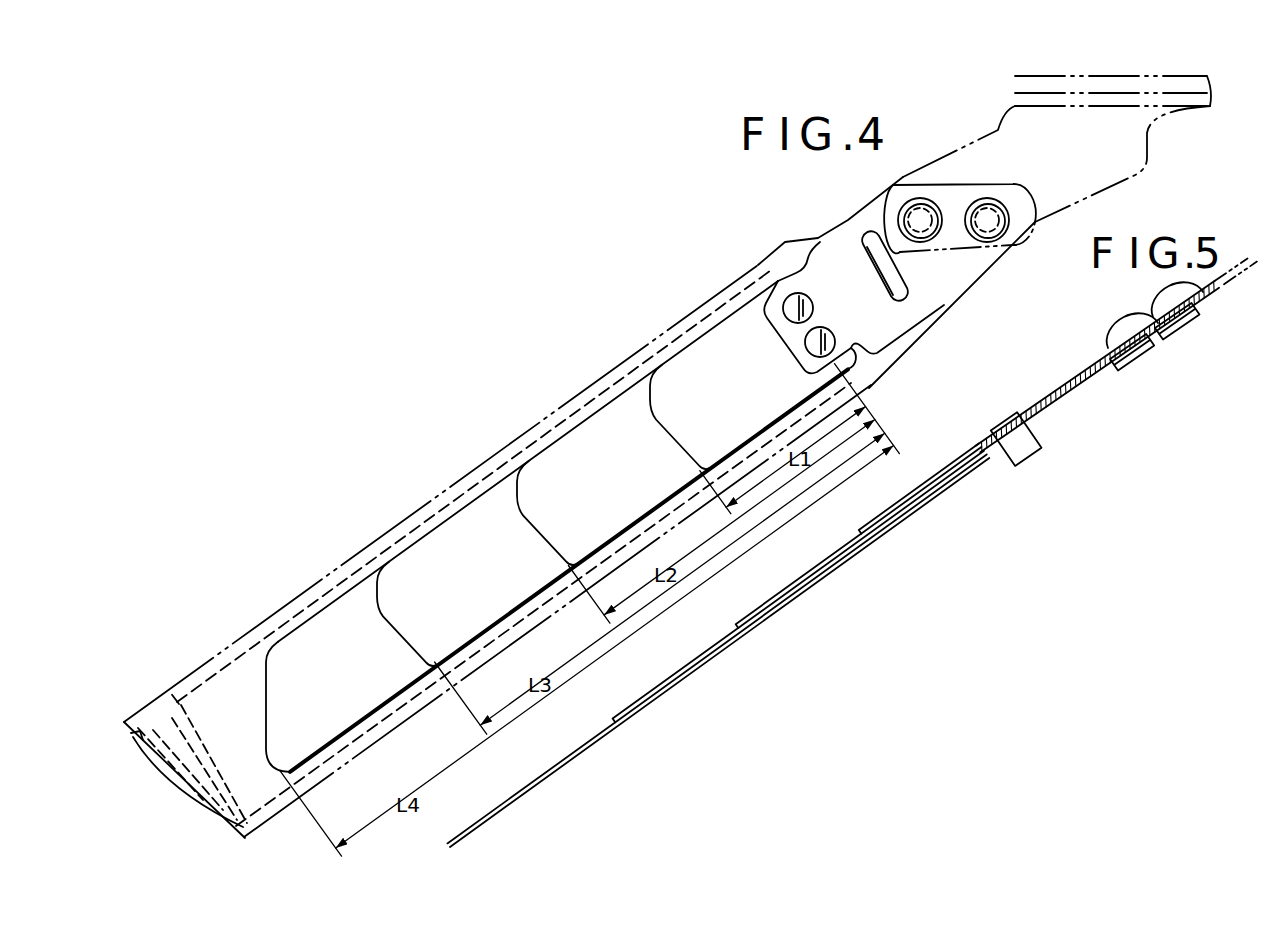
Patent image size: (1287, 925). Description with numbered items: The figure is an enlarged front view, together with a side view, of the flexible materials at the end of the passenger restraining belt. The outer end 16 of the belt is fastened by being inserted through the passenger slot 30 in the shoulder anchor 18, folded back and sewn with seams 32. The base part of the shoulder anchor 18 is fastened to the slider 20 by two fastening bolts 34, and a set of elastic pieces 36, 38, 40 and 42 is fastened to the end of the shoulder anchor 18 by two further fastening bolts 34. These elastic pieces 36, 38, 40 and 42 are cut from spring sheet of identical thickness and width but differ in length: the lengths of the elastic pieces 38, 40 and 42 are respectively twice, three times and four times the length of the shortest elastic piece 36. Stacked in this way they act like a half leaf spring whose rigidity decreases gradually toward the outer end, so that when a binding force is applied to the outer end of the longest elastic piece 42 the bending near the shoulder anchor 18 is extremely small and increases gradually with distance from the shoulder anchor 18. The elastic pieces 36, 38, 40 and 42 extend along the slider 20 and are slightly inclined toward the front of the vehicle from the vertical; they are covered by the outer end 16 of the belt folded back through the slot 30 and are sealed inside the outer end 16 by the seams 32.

In FIG. 4, the outer end 16 is at (390, 734).
In FIG. 4, the shoulder anchor 18 is at (969, 282).
In FIG. 5, the shoulder anchor 18 is at (1062, 398).
In FIG. 4, the slider 20 is at (1133, 165).
In FIG. 5, the slider 20 is at (1243, 284).
In FIG. 4, the slot 30 is at (905, 274).
In FIG. 5, the slot 30 is at (1093, 377).
In FIG. 4, the seams 32 is at (692, 499).
In FIG. 4, the fastening bolts 34 is at (1006, 208).
In FIG. 5, the fastening bolts 34 is at (1203, 334).
In FIG. 4, the elastic piece 36 is at (733, 409).
In FIG. 5, the elastic piece 36 is at (940, 485).
In FIG. 4, the elastic piece 38 is at (618, 489).
In FIG. 5, the elastic piece 38 is at (800, 586).
In FIG. 4, the elastic piece 40 is at (483, 589).
In FIG. 5, the elastic piece 40 is at (680, 677).
In FIG. 4, the elastic piece 42 is at (348, 685).
In FIG. 5, the elastic piece 42 is at (540, 778).